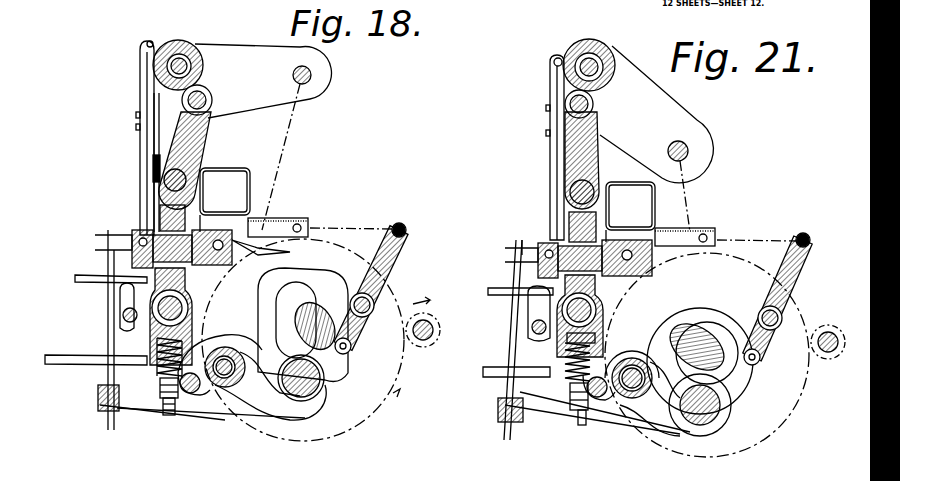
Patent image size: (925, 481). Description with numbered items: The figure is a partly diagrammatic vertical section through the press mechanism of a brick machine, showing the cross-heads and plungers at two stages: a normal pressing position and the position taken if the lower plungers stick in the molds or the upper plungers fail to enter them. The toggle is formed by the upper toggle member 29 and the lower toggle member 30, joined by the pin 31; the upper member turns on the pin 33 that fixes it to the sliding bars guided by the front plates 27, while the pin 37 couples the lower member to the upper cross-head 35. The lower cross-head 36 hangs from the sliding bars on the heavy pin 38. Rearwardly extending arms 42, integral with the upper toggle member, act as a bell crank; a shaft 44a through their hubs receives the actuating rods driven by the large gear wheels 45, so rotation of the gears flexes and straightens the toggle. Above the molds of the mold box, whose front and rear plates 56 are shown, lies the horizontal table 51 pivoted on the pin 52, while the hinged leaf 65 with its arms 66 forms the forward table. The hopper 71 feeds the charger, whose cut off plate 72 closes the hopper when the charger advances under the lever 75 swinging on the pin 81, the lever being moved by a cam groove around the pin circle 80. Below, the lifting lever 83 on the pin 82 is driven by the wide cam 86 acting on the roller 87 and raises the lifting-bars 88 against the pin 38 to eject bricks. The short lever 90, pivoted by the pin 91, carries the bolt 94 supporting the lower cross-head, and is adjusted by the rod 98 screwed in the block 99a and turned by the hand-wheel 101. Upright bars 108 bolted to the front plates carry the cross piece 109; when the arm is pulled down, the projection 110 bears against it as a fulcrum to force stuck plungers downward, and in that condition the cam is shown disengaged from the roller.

In FIG. 18, the front plates 27 is at (150, 180).
In FIG. 18, the upper toggle member 29 is at (203, 85).
In FIG. 18, the lower toggle member 30 is at (207, 126).
In FIG. 21, the lower toggle member 30 is at (566, 150).
In FIG. 18, the pin 31 is at (210, 108).
In FIG. 18, the pin 33 is at (232, 32).
In FIG. 18, the upper cross-head 35 is at (163, 208).
In FIG. 21, the upper cross-head 35 is at (597, 214).
In FIG. 21, the lower cross-head 36 is at (540, 250).
In FIG. 18, the pin 37 is at (166, 178).
In FIG. 21, the pin 37 is at (568, 190).
In FIG. 18, the pin 38 is at (180, 318).
In FIG. 21, the pin 38 is at (598, 313).
In FIG. 18, the rearwardly extending arms 42 is at (280, 46).
In FIG. 21, the rearwardly extending arms 42 is at (647, 117).
In FIG. 18, the shaft 44a is at (312, 78).
In FIG. 18, the gear wheels 45 is at (325, 430).
In FIG. 21, the gear wheels 45 is at (778, 437).
In FIG. 18, the horizontal table 51 is at (218, 230).
In FIG. 18, the pin 52 is at (250, 254).
In FIG. 18, the front and rear plates 56 is at (188, 297).
In FIG. 18, the hinged leaf 65 is at (108, 232).
In FIG. 21, the hinged leaf 65 is at (522, 240).
In FIG. 18, the arms 66 is at (127, 300).
In FIG. 21, the arms 66 is at (550, 310).
In FIG. 18, the hopper 71 is at (262, 230).
In FIG. 21, the hopper 71 is at (657, 193).
In FIG. 18, the cut off plate 72 is at (290, 217).
In FIG. 21, the cut off plate 72 is at (692, 232).
In FIG. 18, the lever 75 is at (393, 267).
In FIG. 21, the lever 75 is at (790, 275).
In FIG. 18, the pawl 80 is at (312, 284).
In FIG. 21, the pawl 80 is at (713, 330).
In FIG. 18, the pin 81 is at (384, 297).
In FIG. 21, the pin 81 is at (788, 306).
In FIG. 18, the pin 82 is at (220, 403).
In FIG. 21, the pin 82 is at (633, 412).
In FIG. 18, the lifting lever 83 is at (275, 403).
In FIG. 21, the lifting lever 83 is at (667, 430).
In FIG. 18, the cam 86 is at (300, 320).
In FIG. 21, the cam 86 is at (675, 327).
In FIG. 18, the roller 87 is at (333, 378).
In FIG. 21, the roller 87 is at (737, 398).
In FIG. 18, the lifting-bars 88 is at (158, 328).
In FIG. 21, the lifting-bars 88 is at (540, 352).
In FIG. 18, the short lever 90 is at (147, 397).
In FIG. 21, the short lever 90 is at (553, 408).
In FIG. 18, the pin 91 is at (195, 397).
In FIG. 21, the pin 91 is at (597, 398).
In FIG. 18, the bolt 94 is at (168, 417).
In FIG. 21, the bolt 94 is at (572, 422).
In FIG. 18, the rod 98 is at (112, 322).
In FIG. 21, the rod 98 is at (522, 340).
In FIG. 18, the block 99a is at (105, 405).
In FIG. 21, the block 99a is at (508, 414).
In FIG. 18, the hand-wheel 101 is at (130, 250).
In FIG. 21, the hand-wheel 101 is at (520, 290).
In FIG. 18, the upright bars 108 is at (142, 60).
In FIG. 21, the upright bars 108 is at (556, 88).
In FIG. 18, the cross piece 109 is at (163, 30).
In FIG. 21, the cross piece 109 is at (570, 45).
In FIG. 18, the projection 110 is at (162, 88).
In FIG. 21, the projection 110 is at (552, 66).